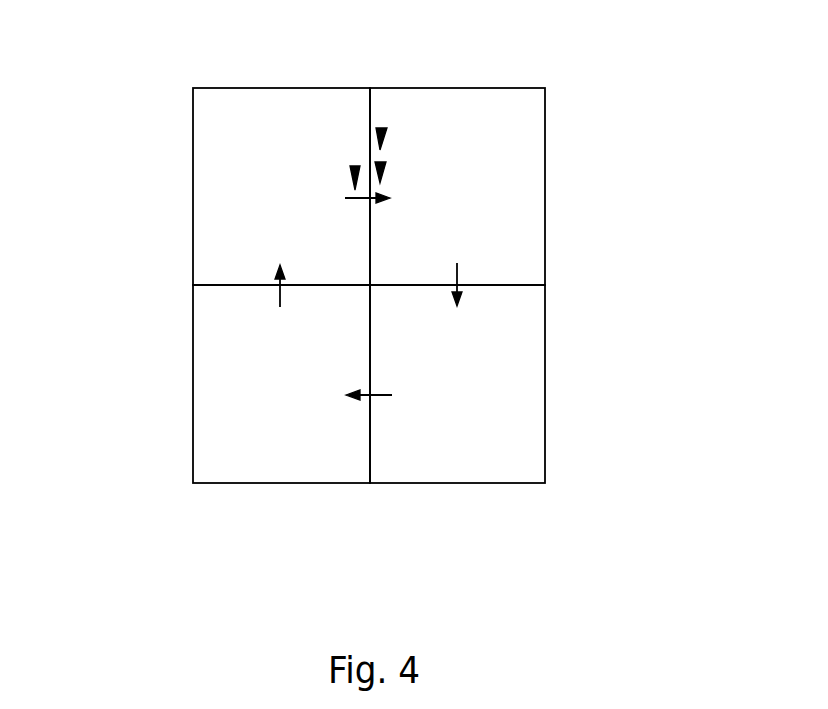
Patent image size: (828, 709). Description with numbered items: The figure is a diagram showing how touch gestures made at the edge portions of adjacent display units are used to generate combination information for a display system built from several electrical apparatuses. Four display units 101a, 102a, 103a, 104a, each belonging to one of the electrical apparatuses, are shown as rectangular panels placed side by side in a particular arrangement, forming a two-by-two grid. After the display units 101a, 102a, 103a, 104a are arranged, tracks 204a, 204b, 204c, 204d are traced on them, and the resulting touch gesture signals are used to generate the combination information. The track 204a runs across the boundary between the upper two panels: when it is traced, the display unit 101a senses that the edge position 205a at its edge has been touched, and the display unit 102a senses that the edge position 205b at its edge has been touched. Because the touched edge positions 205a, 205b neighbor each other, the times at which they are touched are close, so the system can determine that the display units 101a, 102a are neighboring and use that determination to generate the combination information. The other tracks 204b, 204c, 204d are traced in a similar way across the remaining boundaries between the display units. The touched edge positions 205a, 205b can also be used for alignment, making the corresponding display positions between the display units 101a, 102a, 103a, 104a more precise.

The display unit 101a is at (193, 170).
The display unit 102a is at (545, 185).
The display unit 103a is at (193, 388).
The display unit 104a is at (545, 398).
The track 204a is at (382, 130).
The track 204b is at (457, 272).
The track 204c is at (380, 397).
The track 204d is at (280, 293).
The edge position 205a is at (352, 166).
The edge position 205b is at (381, 165).